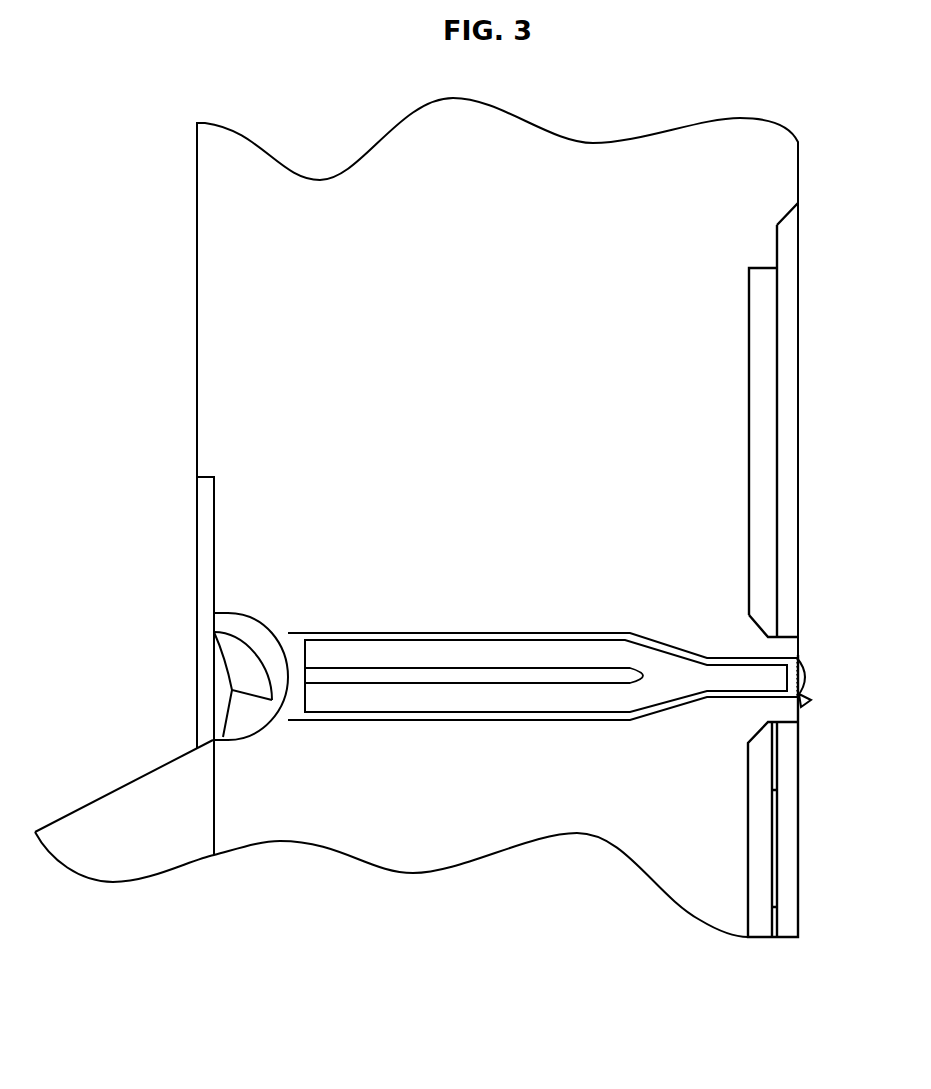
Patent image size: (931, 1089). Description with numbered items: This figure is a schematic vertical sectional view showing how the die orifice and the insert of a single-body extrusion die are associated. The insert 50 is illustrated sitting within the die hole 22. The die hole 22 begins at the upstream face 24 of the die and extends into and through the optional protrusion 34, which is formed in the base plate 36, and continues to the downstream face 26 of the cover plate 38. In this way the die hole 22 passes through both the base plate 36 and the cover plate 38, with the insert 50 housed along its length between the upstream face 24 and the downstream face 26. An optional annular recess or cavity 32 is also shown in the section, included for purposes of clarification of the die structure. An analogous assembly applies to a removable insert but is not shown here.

The die hole 22 is at (293, 645).
The upstream face 24 is at (215, 530).
The downstream face 26 is at (790, 700).
The annular recess or cavity 32 is at (757, 282).
The protrusion 34 is at (748, 637).
The base plate 36 is at (416, 517).
The cover plate 38 is at (775, 455).
The insert 50 is at (465, 697).